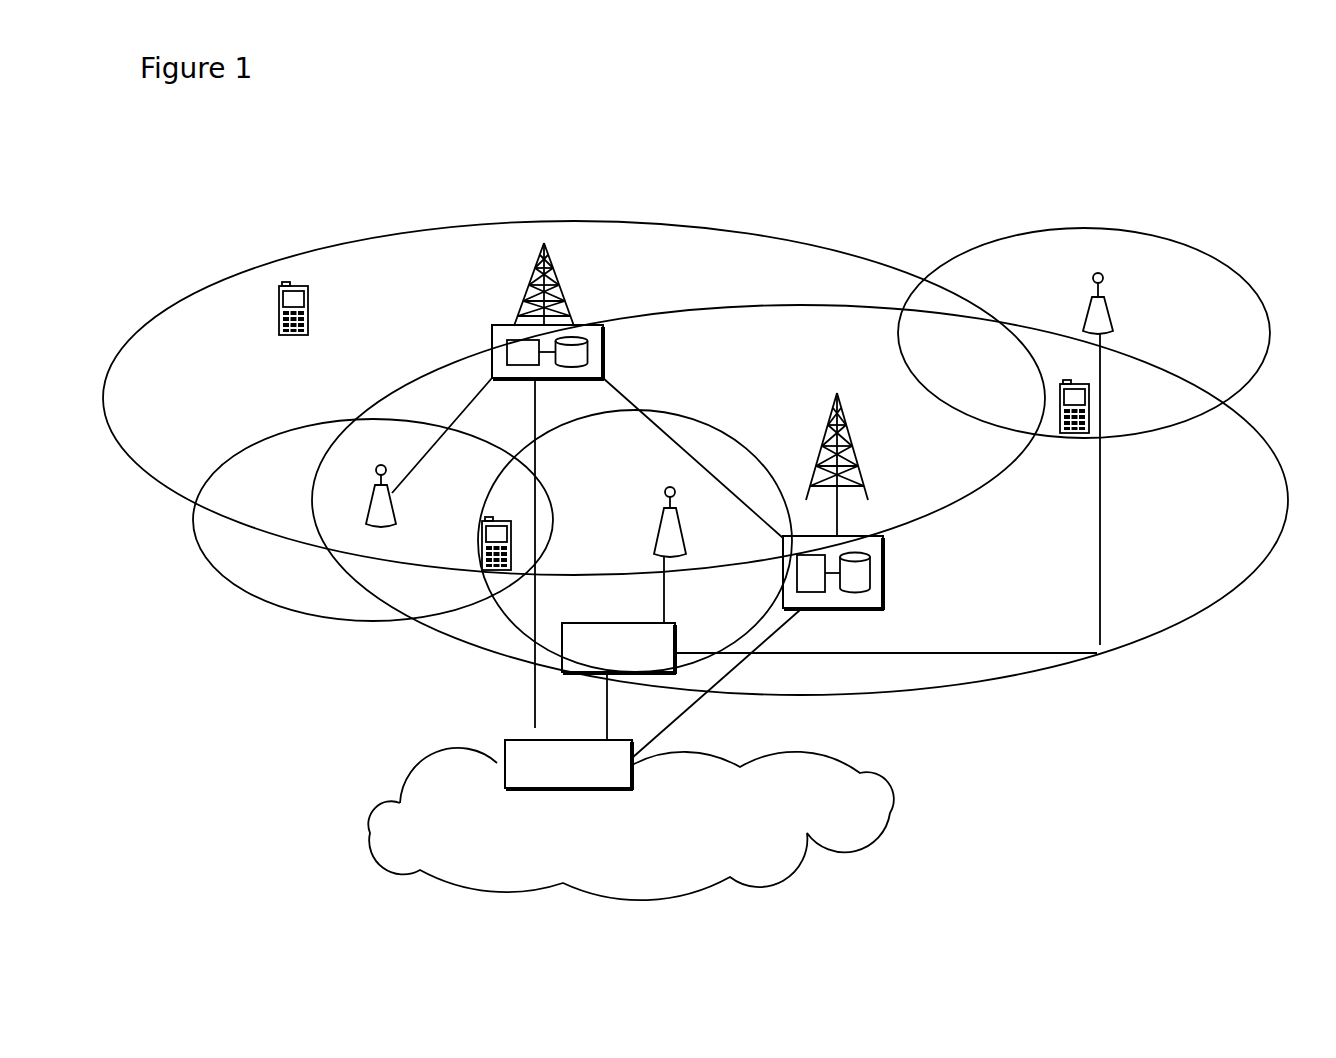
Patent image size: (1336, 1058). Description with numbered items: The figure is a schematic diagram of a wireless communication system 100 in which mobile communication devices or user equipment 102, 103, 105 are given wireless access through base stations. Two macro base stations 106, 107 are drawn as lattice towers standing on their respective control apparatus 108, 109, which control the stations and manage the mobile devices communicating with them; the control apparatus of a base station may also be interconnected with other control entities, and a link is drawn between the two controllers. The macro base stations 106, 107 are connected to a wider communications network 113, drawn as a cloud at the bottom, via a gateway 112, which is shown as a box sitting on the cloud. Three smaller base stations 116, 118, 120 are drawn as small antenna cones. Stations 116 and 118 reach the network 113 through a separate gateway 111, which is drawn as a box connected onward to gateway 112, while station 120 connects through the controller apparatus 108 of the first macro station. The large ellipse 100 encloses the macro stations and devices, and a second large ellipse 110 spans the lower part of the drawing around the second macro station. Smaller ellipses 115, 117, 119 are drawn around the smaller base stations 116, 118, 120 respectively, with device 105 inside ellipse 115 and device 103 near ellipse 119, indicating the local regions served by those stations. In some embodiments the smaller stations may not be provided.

The wireless communication system 100 is at (202, 270).
The mobile communication device 102 is at (277, 323).
The mobile communication device 103 is at (482, 550).
The mobile communication device 105 is at (1075, 433).
The macro base station 106 is at (522, 290).
The macro base station 107 is at (860, 465).
The control apparatus 108 is at (492, 342).
The control apparatus 109 is at (873, 598).
The macro cell coverage area 110 is at (1163, 643).
The gateway 111 is at (568, 653).
The gateway 112 is at (505, 740).
The communications network 113 is at (430, 800).
The femto cell coverage area 115 is at (1240, 252).
The smaller base station 116 is at (1082, 307).
The femto cell coverage area 117 is at (702, 423).
The smaller base station 118 is at (656, 532).
The femto cell coverage area 119 is at (278, 598).
The smaller base station 120 is at (367, 500).